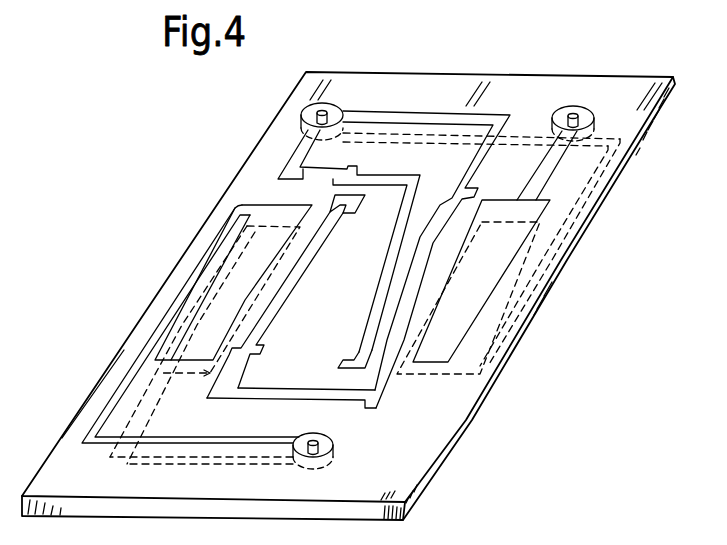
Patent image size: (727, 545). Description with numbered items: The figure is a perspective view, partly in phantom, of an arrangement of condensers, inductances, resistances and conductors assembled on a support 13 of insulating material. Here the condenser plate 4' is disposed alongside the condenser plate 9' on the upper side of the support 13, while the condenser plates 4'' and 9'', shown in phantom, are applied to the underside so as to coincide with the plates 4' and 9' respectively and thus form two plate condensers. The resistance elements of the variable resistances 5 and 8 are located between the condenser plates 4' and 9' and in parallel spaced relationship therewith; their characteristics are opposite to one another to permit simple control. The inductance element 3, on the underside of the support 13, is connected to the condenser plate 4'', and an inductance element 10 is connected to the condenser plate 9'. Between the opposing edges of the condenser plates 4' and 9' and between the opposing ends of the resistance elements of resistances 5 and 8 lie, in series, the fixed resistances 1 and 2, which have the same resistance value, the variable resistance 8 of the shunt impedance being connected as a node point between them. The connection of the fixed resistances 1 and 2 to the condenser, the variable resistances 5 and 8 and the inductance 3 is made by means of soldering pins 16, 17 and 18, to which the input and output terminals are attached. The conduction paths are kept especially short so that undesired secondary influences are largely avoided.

The fixed resistance 1 is at (330, 162).
The fixed resistance 2 is at (352, 400).
The inductance element 3 is at (582, 200).
The condenser plate 4' is at (495, 276).
The condenser plate 4'' is at (487, 298).
The variable resistance 5 is at (408, 268).
The variable resistance 8 is at (293, 287).
The condenser plate 9' is at (233, 261).
The condenser plate 9'' is at (205, 345).
The inductance element 10 is at (158, 330).
The support 13 is at (470, 425).
The soldering pin 16 is at (577, 107).
The soldering pin 17 is at (321, 103).
The soldering pin 18 is at (333, 446).